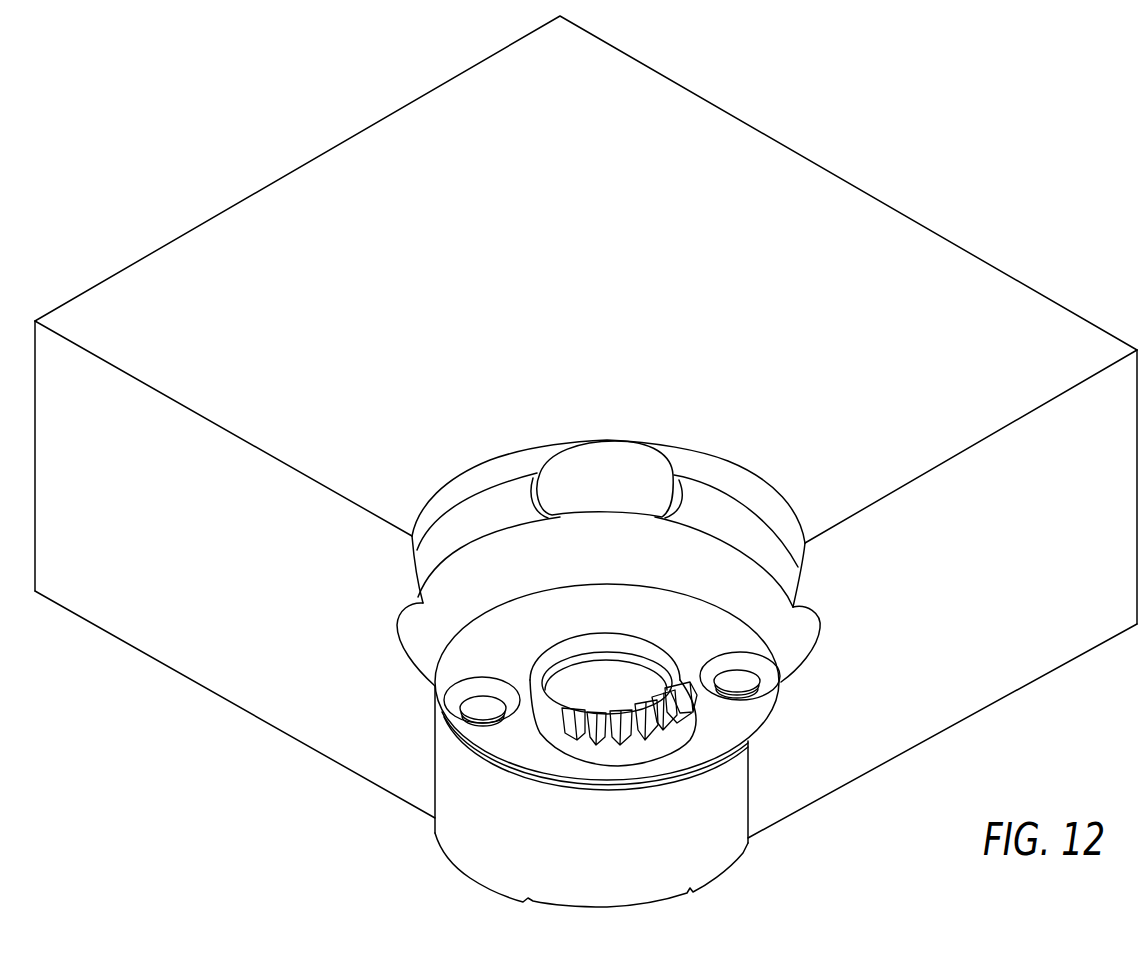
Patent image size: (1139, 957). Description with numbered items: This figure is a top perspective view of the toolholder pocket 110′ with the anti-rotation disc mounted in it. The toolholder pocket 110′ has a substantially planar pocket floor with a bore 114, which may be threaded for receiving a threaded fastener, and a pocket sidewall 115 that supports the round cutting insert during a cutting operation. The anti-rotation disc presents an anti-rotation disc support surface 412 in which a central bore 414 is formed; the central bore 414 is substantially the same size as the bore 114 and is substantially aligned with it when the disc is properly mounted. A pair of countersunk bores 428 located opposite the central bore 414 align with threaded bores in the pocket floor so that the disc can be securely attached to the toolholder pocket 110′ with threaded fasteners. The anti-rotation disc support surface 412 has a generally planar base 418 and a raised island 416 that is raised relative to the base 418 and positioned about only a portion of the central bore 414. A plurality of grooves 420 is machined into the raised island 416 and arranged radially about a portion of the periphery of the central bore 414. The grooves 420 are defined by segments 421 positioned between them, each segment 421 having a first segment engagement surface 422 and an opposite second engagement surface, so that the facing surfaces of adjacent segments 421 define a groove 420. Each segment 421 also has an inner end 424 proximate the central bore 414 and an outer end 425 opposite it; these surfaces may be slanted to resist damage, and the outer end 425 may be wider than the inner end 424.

The toolholder pocket 110′ is at (560, 396).
The pocket sidewall 115 is at (734, 518).
The anti-rotation disc support surface 412 is at (534, 751).
The base 418 is at (643, 607).
The central bore 414 is at (586, 642).
The bore 114 is at (611, 683).
The inner end 424 is at (562, 667).
The countersunk bores 428 is at (473, 705).
The raised island 416 is at (542, 760).
The grooves 420 is at (680, 720).
The segments 421 is at (634, 742).
The first segment engagement surface 422 is at (652, 738).
The outer end 425 is at (583, 747).